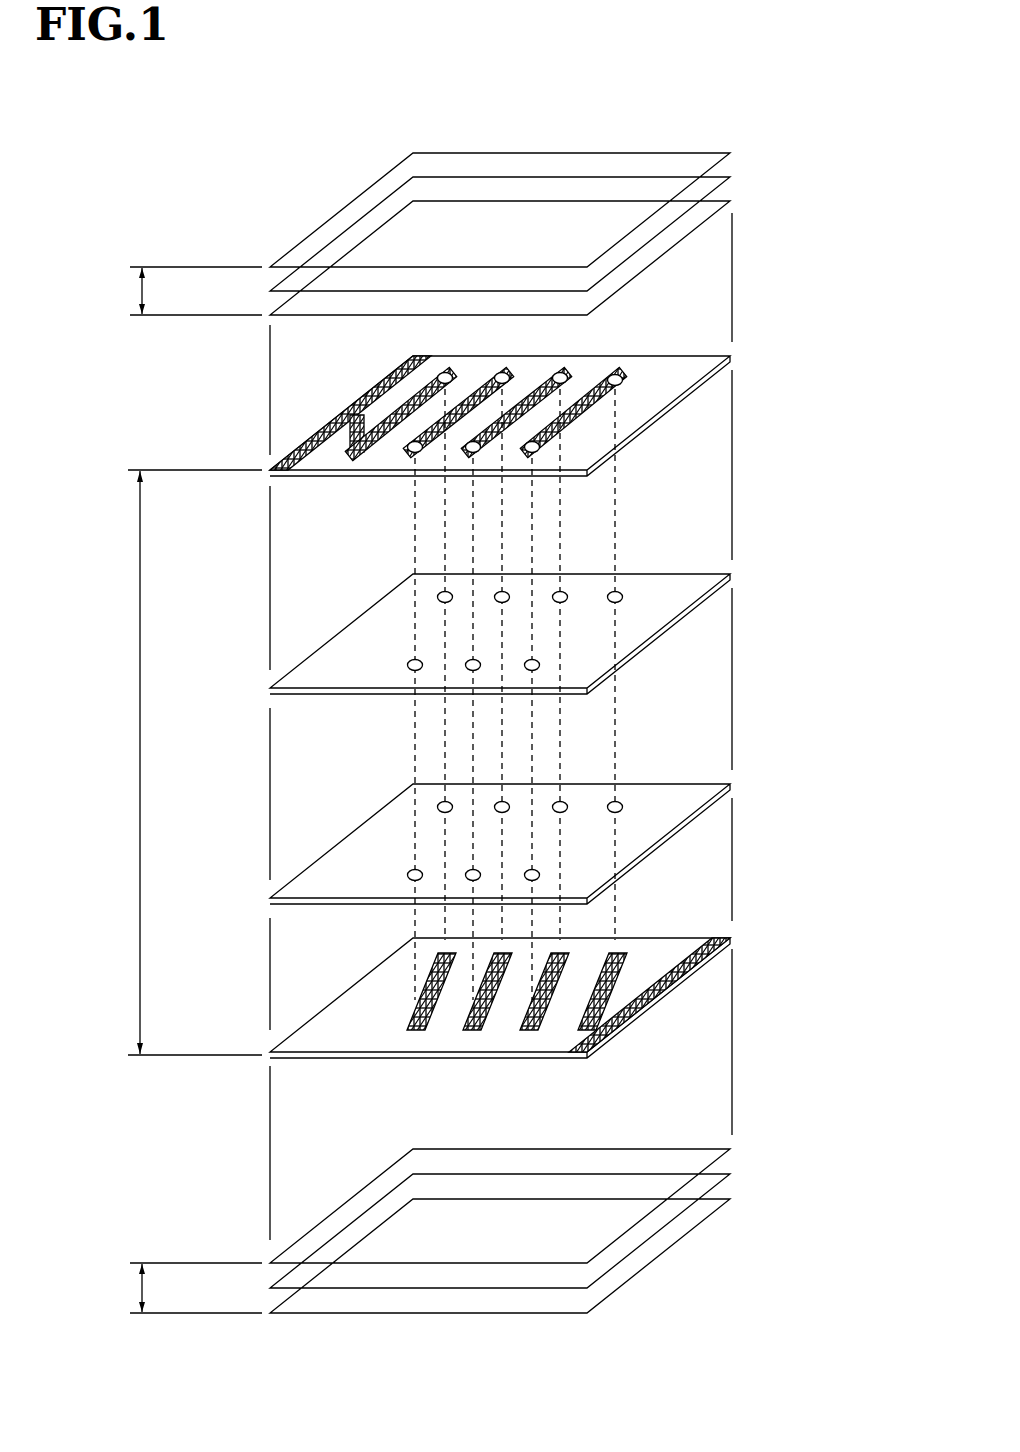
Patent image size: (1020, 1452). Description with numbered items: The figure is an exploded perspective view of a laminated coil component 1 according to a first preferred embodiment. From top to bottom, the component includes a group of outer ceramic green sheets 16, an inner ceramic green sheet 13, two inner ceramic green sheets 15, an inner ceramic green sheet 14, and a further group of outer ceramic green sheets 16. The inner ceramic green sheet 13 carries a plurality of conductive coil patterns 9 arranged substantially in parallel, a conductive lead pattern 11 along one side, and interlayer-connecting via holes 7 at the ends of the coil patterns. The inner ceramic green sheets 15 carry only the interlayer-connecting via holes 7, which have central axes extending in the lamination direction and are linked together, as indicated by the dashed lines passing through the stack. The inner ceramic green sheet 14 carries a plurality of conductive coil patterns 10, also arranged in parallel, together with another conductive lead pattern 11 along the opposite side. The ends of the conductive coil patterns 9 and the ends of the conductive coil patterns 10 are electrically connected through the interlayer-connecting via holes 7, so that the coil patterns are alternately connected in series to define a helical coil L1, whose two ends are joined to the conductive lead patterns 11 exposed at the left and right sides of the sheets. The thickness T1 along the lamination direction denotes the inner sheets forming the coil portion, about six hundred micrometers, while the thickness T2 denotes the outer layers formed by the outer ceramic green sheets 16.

The laminated coil component 1 is at (362, 131).
The interlayer-connecting via hole 7 is at (446, 372).
The conductive coil pattern 9 is at (397, 403).
The conductive coil pattern 10 is at (407, 1015).
The conductive lead pattern 11 is at (352, 418).
The inner ceramic green sheet 13 is at (667, 390).
The inner ceramic green sheet 14 is at (685, 935).
The inner ceramic green sheet 15 is at (667, 605).
The outer ceramic green sheet 16 is at (341, 210).
The thickness of inner ceramic green sheets T1 is at (178, 762).
The thickness of outer layers T2 is at (178, 790).
The helical coil L1 is at (408, 1002).